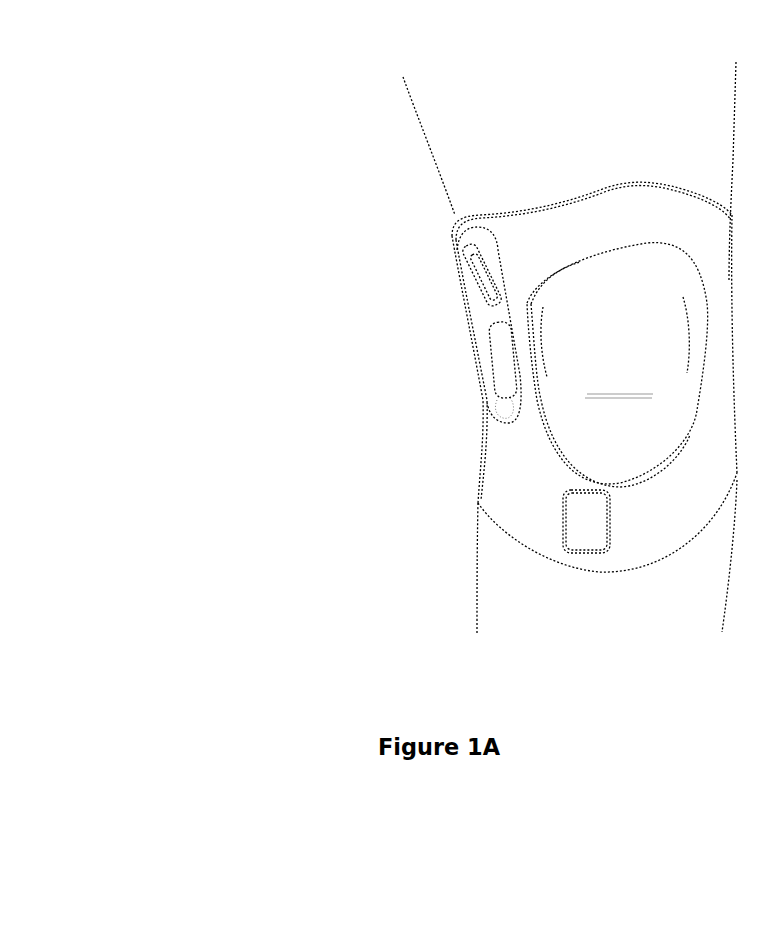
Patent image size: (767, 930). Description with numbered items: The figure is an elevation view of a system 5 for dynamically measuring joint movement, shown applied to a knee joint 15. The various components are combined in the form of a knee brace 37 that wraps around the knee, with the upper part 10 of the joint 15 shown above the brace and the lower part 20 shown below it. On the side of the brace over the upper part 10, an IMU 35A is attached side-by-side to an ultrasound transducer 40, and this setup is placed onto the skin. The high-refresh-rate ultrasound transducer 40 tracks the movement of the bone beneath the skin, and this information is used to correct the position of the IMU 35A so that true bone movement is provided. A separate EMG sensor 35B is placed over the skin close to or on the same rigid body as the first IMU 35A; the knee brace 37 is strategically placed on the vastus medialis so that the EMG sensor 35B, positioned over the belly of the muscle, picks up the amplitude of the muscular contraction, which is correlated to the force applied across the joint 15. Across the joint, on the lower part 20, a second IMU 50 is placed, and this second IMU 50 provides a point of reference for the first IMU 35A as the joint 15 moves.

The system 5 is at (431, 358).
The upper part 10 is at (569, 171).
The knee joint 15 is at (617, 365).
The lower part 20 is at (607, 573).
The IMU 35A is at (417, 275).
The EMG sensor 35B is at (417, 277).
The knee brace 37 is at (505, 542).
The ultrasound transducer 40 is at (426, 325).
The second IMU 50 is at (563, 515).